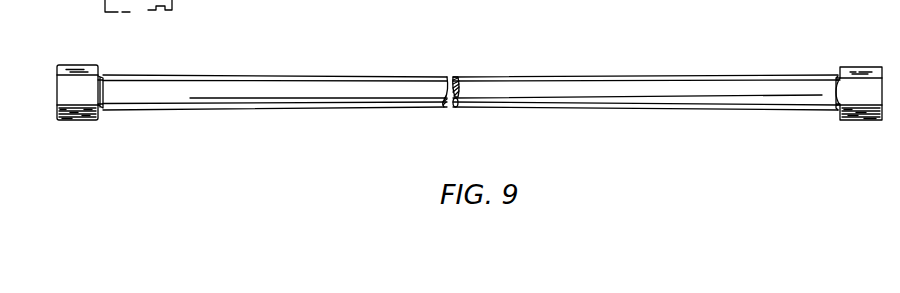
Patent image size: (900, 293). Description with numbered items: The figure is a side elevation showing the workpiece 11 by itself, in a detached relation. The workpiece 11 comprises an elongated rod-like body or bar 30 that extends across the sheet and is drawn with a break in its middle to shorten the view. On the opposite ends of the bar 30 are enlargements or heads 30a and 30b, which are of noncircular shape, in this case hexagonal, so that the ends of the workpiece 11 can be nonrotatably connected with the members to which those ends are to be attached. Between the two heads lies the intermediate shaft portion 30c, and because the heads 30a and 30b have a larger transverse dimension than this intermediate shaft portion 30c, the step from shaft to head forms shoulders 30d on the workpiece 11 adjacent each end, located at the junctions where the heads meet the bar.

The workpiece 11 is at (522, 76).
The rod-like body or bar 30 is at (318, 101).
The head 30a is at (857, 121).
The head 30b is at (75, 122).
The intermediate shaft portion 30c is at (565, 102).
The shoulders 30d is at (100, 67).